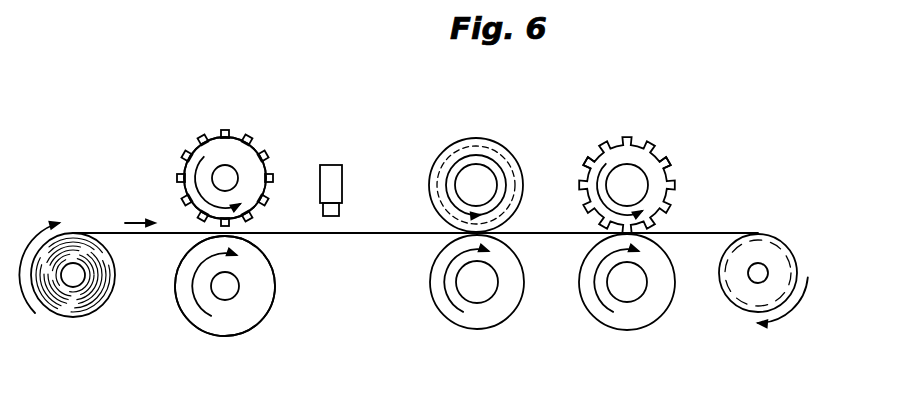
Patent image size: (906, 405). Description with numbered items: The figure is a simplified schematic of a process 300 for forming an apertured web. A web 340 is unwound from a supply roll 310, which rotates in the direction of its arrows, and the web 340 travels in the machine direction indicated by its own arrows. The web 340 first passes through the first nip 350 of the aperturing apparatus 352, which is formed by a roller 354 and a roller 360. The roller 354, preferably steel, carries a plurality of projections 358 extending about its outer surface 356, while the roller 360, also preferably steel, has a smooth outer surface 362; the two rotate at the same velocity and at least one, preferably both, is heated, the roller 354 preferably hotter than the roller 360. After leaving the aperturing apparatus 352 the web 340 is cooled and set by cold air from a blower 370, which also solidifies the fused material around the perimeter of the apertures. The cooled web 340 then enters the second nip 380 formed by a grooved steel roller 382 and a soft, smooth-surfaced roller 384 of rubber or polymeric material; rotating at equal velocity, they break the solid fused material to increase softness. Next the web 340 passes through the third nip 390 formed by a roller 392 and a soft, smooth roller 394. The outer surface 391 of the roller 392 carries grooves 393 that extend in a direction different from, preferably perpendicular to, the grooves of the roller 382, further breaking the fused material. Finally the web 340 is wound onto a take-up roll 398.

The process 300 is at (111, 97).
The supply roll 310 is at (75, 312).
The web 340 is at (103, 231).
The first nip 350 is at (184, 241).
The aperturing apparatus 352 is at (286, 108).
The roller 354 is at (185, 160).
The outer surface 356 is at (267, 160).
The projections 358 is at (226, 130).
The roller 360 is at (262, 310).
The smooth outer surface 362 is at (235, 335).
The blower 370 is at (338, 177).
The second nip 380 is at (432, 241).
The roller 382 is at (478, 150).
The roller 384 is at (477, 313).
The third nip 390 is at (589, 241).
The outer surface 391 is at (672, 168).
The roller 392 is at (645, 160).
The grooves 393 is at (595, 158).
The roller 394 is at (640, 315).
The take-up roll 398 is at (773, 245).